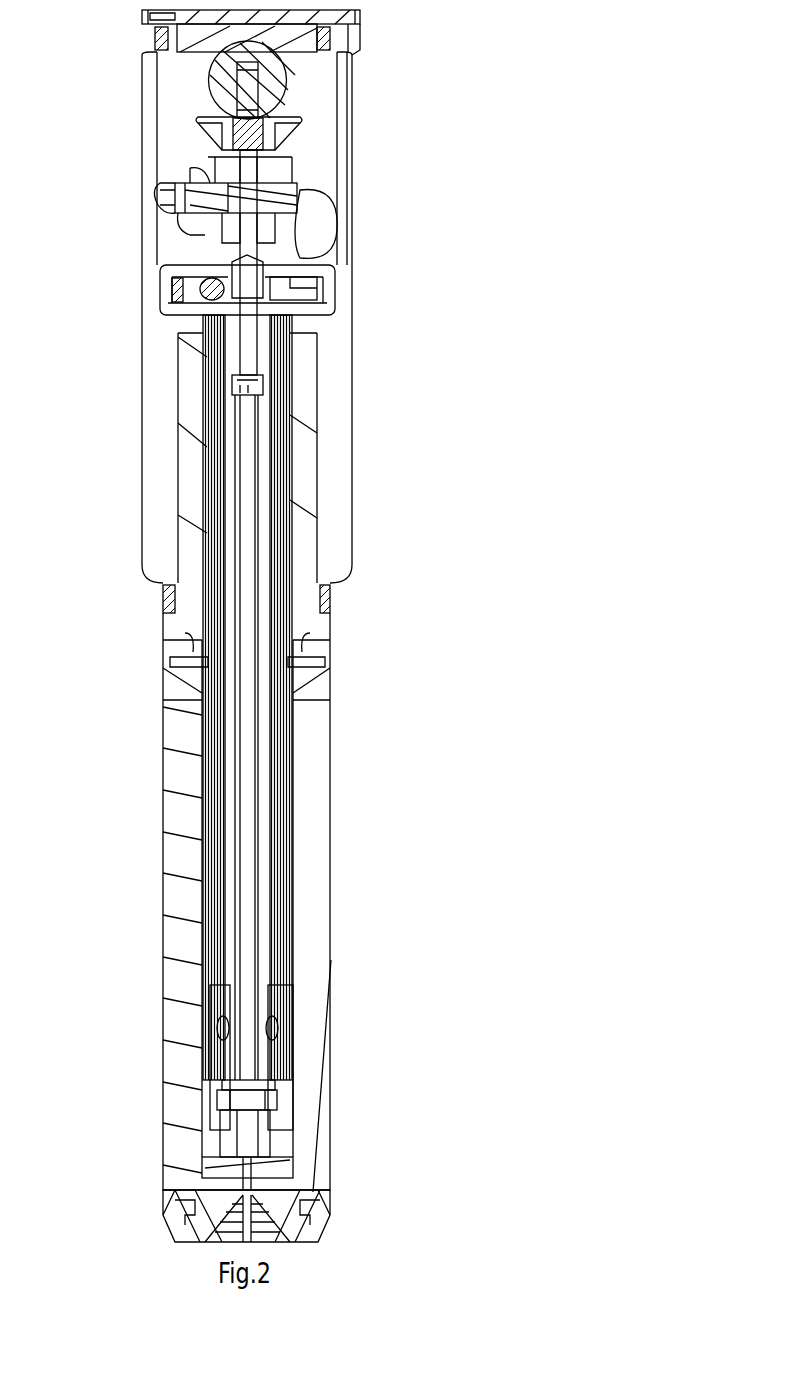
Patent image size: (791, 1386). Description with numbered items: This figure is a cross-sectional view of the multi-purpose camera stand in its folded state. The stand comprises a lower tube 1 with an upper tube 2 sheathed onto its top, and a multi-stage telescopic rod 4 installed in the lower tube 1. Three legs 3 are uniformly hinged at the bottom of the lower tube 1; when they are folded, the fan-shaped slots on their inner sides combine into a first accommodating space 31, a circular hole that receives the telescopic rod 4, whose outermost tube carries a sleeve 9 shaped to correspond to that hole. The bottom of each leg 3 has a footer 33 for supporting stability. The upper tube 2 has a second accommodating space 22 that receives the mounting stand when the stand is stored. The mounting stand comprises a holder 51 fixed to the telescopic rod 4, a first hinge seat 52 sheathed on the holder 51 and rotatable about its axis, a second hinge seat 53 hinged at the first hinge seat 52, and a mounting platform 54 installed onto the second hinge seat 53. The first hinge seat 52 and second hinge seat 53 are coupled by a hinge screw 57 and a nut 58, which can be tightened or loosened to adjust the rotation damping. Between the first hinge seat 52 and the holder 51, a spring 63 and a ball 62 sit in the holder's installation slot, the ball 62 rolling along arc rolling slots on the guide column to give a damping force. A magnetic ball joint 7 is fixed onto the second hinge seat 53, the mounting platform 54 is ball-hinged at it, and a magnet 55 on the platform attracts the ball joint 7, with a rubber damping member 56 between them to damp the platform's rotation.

The lower tube 1 is at (319, 606).
The upper tube 2 is at (338, 519).
The leg 3 is at (305, 944).
The multi-stage telescopic rod 4 is at (291, 799).
The ball joint 7 is at (225, 98).
The sleeve 9 is at (274, 1145).
The second accommodating space 22 is at (167, 246).
The first accommodating space 31 is at (295, 1061).
The footer 33 is at (301, 1204).
The holder 51 is at (268, 342).
The first hinge seat 52 is at (287, 260).
The second hinge seat 53 is at (273, 141).
The mounting platform 54 is at (322, 60).
The magnet 55 is at (305, 42).
The damping member 56 is at (197, 65).
The hinge screw 57 is at (311, 216).
The nut 58 is at (164, 209).
The ball 62 is at (207, 304).
The spring 63 is at (175, 305).